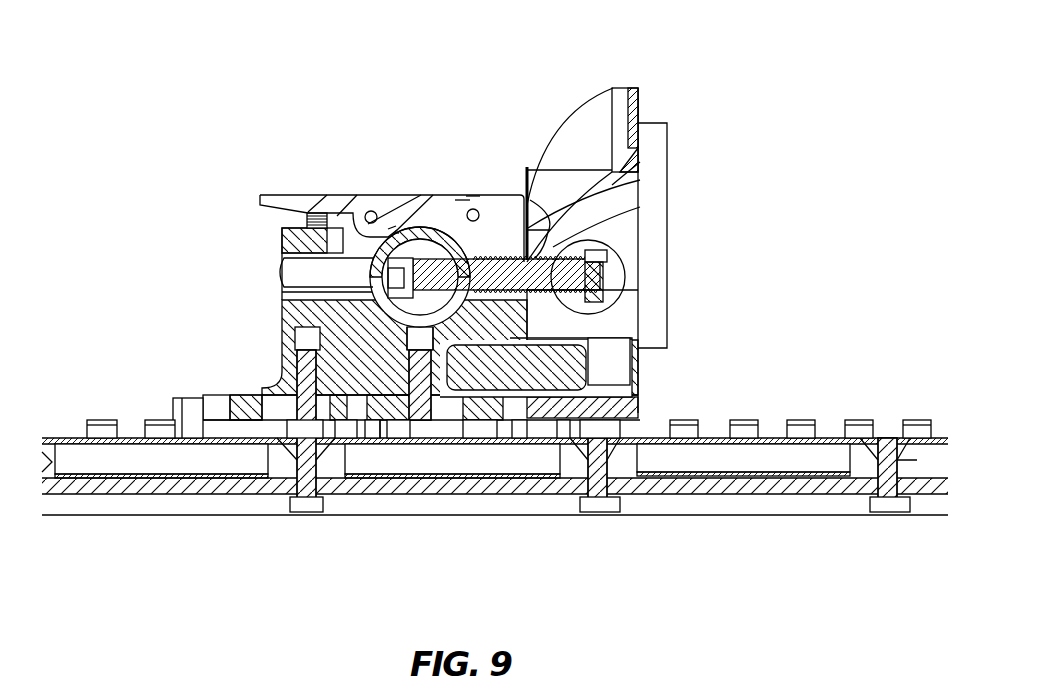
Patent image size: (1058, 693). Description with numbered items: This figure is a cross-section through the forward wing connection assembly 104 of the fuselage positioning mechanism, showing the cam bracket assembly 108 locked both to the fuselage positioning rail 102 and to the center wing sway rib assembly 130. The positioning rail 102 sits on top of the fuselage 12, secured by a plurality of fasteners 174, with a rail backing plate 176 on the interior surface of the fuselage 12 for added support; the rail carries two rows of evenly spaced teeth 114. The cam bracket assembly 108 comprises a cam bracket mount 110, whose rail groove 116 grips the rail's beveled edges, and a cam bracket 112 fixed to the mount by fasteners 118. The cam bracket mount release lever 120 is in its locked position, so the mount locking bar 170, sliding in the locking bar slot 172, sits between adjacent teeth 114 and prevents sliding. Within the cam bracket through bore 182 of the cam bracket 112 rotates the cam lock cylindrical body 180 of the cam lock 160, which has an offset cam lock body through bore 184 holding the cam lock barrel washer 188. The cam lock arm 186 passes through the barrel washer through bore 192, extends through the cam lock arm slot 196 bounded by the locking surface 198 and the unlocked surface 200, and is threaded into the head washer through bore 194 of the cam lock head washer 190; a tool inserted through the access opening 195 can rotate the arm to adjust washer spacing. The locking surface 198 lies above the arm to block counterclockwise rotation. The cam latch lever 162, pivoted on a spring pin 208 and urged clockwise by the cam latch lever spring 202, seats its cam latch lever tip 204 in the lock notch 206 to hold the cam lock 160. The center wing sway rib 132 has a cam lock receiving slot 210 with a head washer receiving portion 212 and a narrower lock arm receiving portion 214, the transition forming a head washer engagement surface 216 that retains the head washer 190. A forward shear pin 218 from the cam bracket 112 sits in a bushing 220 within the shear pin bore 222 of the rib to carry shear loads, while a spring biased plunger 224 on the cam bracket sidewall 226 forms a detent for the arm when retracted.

The fuselage 12 is at (157, 480).
The fuselage positioning rail 102 is at (87, 458).
The forward wing connection assembly 104 is at (170, 194).
The cam bracket assembly 108 is at (317, 104).
The cam bracket mount 110 is at (218, 393).
The cam bracket 112 is at (283, 337).
The teeth 114 is at (860, 418).
The rail groove 116 is at (243, 420).
The fasteners 118 is at (460, 432).
The cam bracket mount release lever 120 is at (177, 407).
The center wing sway rib assembly 130 is at (670, 64).
The center wing sway rib 132 is at (623, 92).
The cam lock 160 is at (463, 202).
The cam latch lever 162 is at (298, 195).
The mount locking bar 170 is at (355, 420).
The locking bar slot 172 is at (387, 423).
The fasteners 174 is at (307, 507).
The rail backing plate 176 is at (740, 488).
The cam lock cylindrical body 180 is at (494, 193).
The cam bracket through bore 182 is at (372, 273).
The cam lock body through bore 184 is at (367, 283).
The cam lock arm 186 is at (640, 207).
The cam lock barrel washer 188 is at (425, 233).
The cam lock head washer 190 is at (597, 250).
The barrel washer through bore 192 is at (510, 193).
The head washer through bore 194 is at (603, 267).
The access opening 195 is at (280, 292).
The cam lock arm slot 196 is at (393, 315).
The locking surface 198 is at (640, 180).
The unlocked surface 200 is at (280, 246).
The cam latch lever spring 202 is at (307, 220).
The cam latch lever tip 204 is at (397, 233).
The lock notch 206 is at (393, 227).
The spring pin 208 is at (368, 212).
The cam lock receiving slot 210 is at (630, 302).
The head washer receiving portion 212 is at (612, 185).
The lock arm receiving portion 214 is at (530, 168).
The head washer engagement surface 216 is at (497, 195).
The forward shear pin 218 is at (588, 357).
The bushing 220 is at (637, 387).
The shear pin bore 222 is at (617, 363).
The spring biased plunger 224 is at (474, 209).
The cam bracket sidewall 226 is at (470, 195).